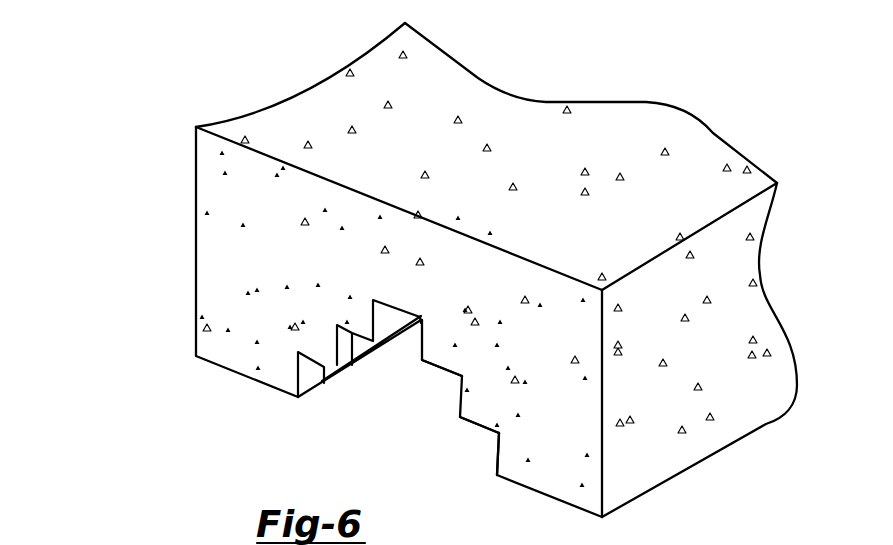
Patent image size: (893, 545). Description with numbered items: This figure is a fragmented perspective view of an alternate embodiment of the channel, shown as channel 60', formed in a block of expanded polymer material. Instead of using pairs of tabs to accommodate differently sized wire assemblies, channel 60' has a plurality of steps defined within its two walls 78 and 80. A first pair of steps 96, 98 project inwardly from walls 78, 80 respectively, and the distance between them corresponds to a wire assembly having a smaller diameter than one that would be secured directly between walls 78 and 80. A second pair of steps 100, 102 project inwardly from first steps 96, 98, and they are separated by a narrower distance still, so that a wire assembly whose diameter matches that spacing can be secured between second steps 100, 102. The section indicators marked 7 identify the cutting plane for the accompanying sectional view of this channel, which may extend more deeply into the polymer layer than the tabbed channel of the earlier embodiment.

The section line 7- 7 is at (180, 242).
The channel 60' is at (496, 270).
The wall 78 is at (493, 462).
The wall 80 is at (305, 372).
The first step 96 is at (472, 425).
The first step 98 is at (327, 381).
The second step 100 is at (433, 367).
The second step 102 is at (354, 362).